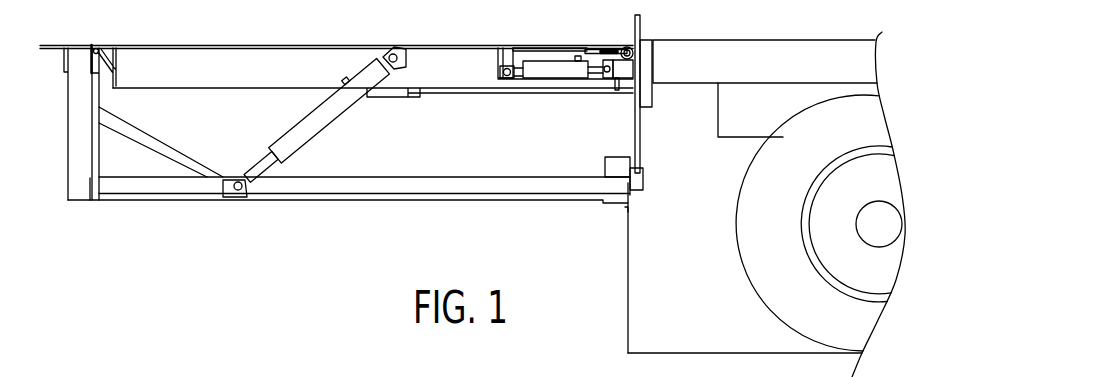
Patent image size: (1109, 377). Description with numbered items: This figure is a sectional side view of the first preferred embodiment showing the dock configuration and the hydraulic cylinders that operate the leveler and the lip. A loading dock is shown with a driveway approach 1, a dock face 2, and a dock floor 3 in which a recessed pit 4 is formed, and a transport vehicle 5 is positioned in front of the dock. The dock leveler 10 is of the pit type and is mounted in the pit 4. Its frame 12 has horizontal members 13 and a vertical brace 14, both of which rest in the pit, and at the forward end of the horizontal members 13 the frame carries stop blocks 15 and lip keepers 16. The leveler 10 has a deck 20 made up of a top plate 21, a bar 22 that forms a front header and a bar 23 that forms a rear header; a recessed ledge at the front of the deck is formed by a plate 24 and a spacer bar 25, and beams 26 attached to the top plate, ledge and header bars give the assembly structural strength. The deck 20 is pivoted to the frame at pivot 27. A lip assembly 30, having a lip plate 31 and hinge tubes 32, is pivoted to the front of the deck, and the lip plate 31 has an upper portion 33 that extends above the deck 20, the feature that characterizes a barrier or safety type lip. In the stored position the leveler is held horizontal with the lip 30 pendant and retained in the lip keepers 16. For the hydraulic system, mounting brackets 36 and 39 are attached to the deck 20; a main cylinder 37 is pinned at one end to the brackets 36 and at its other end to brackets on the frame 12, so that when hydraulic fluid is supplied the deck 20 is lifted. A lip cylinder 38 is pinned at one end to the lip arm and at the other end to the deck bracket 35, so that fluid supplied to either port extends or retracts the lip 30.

The driveway approach 1 is at (702, 352).
The dock face 2 is at (630, 305).
The dock floor 3 is at (38, 48).
The recessed pit 4 is at (377, 202).
The transport vehicle 5 is at (755, 40).
The dock leveler 10 is at (362, 29).
The frame 12 is at (364, 164).
The horizontal members 13 is at (395, 177).
The vertical brace 14 is at (100, 170).
The stop blocks 15 is at (605, 170).
The lip keepers 16 is at (645, 178).
The deck 20 is at (362, 29).
The top plate 21 is at (304, 31).
The bar forming front header 22 is at (613, 80).
The bar forming rear header 23 is at (115, 82).
The plate 24 is at (602, 50).
The spacer bar 25 is at (585, 46).
The beams 26 is at (225, 91).
The pivot 27 is at (95, 49).
The lip assembly 30 is at (666, 94).
The lip plate 31 is at (670, 146).
The hinge tubes 32 is at (624, 48).
The upper portion 33 is at (641, 30).
The deck bracket 35 is at (622, 78).
The mounting brackets 36 is at (412, 47).
The main cylinder 37 is at (348, 115).
The lip cylinder 38 is at (545, 79).
The mounting brackets 39 is at (500, 52).